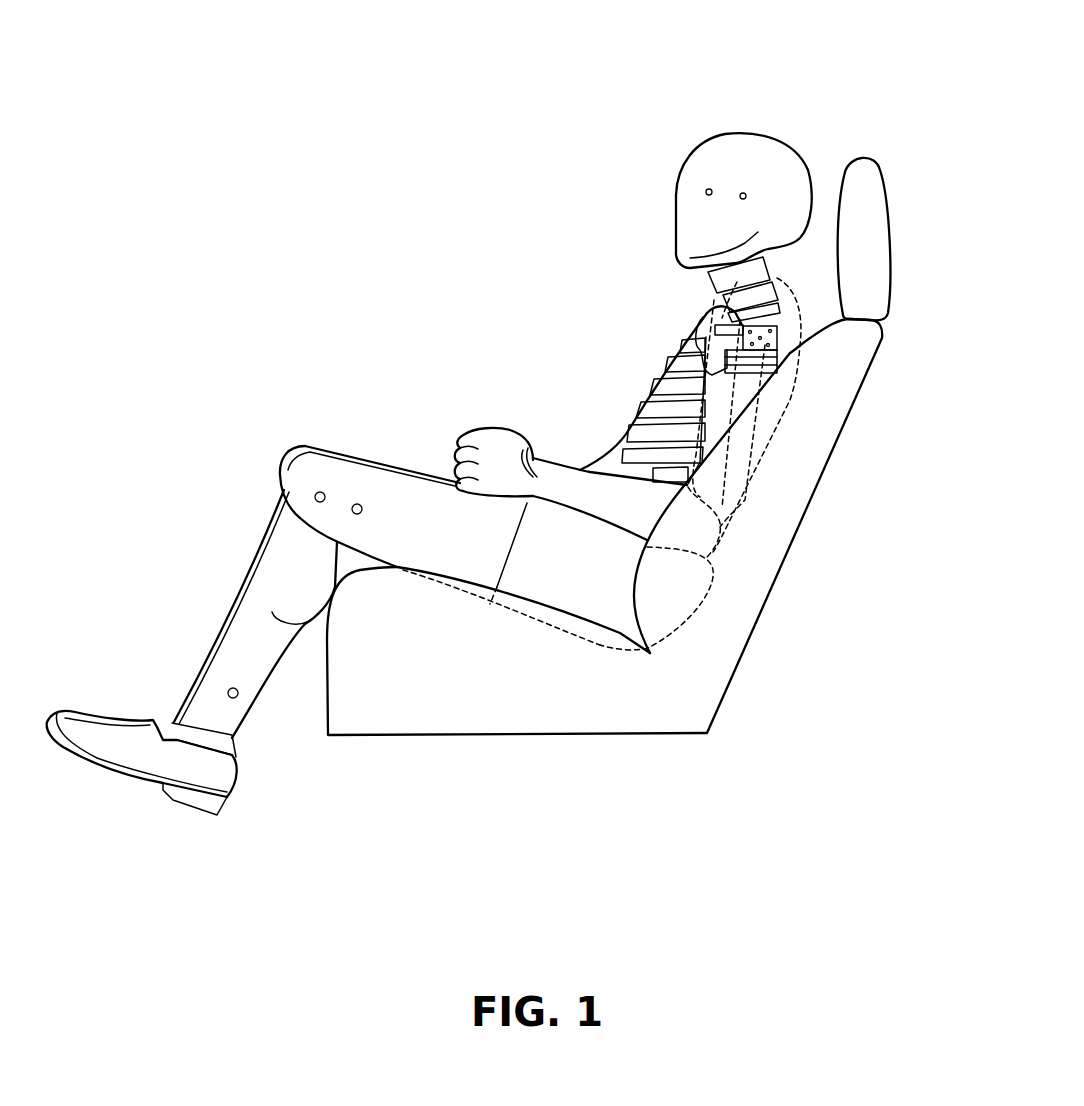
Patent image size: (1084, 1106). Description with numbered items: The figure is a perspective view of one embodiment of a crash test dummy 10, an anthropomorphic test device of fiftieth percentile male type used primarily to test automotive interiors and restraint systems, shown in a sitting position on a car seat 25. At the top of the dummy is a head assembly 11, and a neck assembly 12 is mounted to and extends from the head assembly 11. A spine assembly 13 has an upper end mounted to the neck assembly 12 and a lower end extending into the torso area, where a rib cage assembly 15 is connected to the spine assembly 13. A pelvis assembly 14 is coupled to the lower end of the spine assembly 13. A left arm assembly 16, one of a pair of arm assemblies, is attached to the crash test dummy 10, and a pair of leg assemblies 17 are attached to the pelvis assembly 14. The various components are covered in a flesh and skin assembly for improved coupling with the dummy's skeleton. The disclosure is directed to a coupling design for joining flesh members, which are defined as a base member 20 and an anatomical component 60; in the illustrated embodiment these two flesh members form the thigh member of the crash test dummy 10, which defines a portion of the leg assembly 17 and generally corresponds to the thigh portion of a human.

The crash test dummy 10 is at (877, 92).
The head assembly 11 is at (738, 147).
The neck assembly 12 is at (707, 282).
The spine assembly 13 is at (738, 395).
The pelvis assembly 14 is at (502, 759).
The rib cage assembly 15 is at (663, 387).
The left arm assembly 16 is at (647, 512).
The leg assembly 17 is at (348, 582).
The base member 20 is at (573, 580).
The car seat 25 is at (910, 313).
The anatomical component 60 is at (440, 540).